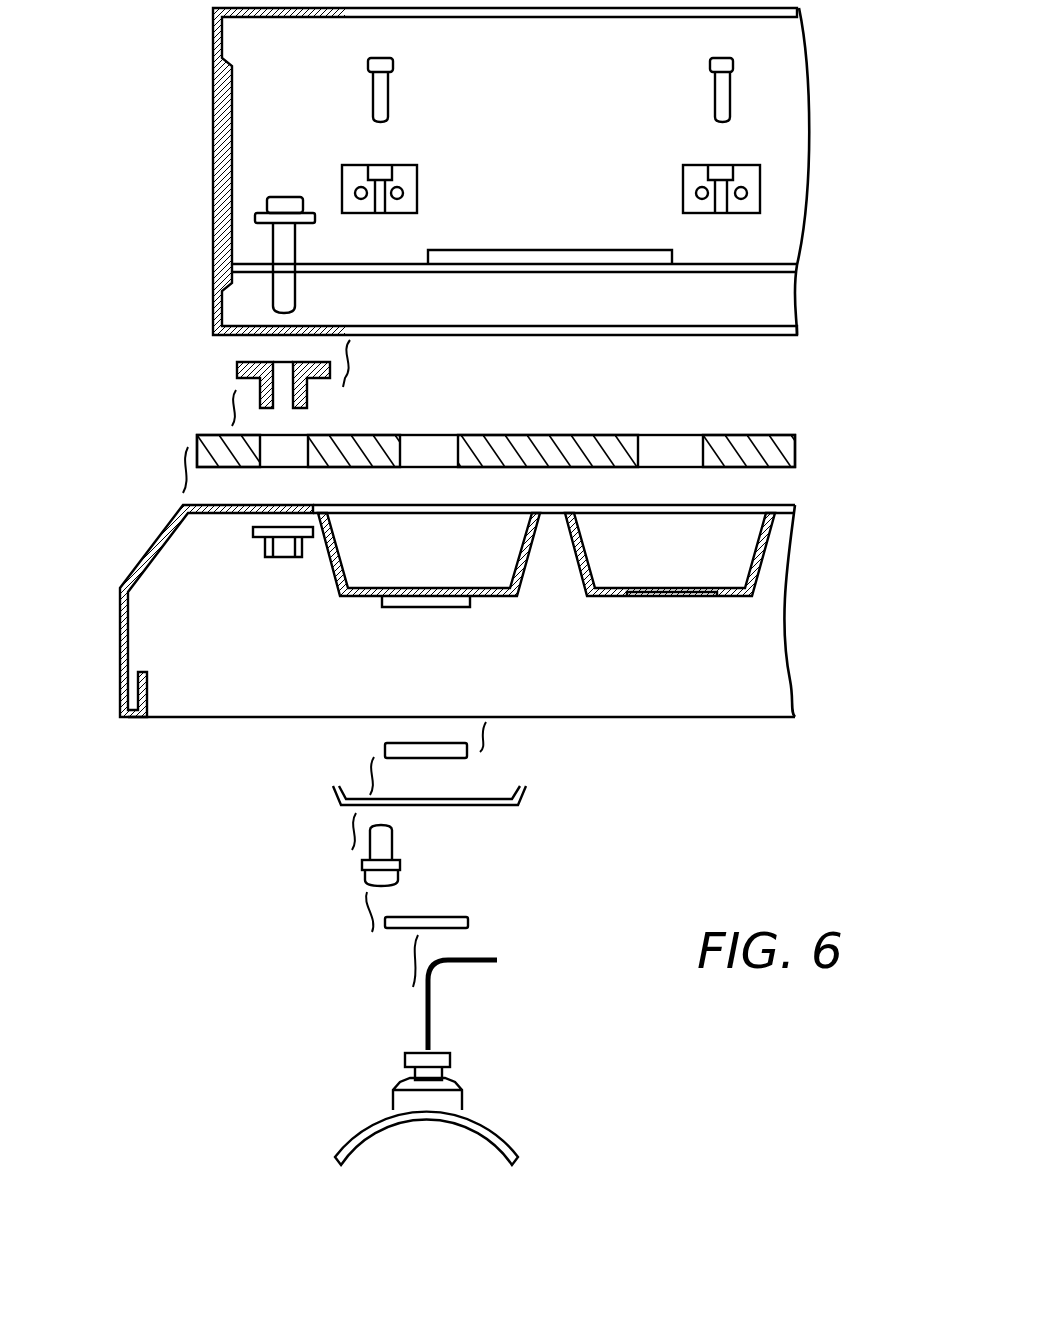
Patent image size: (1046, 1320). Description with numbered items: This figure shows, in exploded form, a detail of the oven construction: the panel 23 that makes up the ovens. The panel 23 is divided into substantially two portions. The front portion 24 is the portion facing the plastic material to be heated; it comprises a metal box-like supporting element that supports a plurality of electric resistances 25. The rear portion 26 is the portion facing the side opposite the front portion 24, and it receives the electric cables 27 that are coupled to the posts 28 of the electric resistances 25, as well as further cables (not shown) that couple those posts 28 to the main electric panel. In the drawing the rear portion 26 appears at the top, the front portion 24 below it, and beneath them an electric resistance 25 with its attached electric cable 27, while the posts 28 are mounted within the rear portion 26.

The panel 23 is at (540, 171).
The front portion 24 is at (130, 670).
The electric resistance 25 is at (368, 1125).
The rear portion 26 is at (255, 105).
The electric cable 27 is at (437, 973).
The post 28 is at (416, 180).